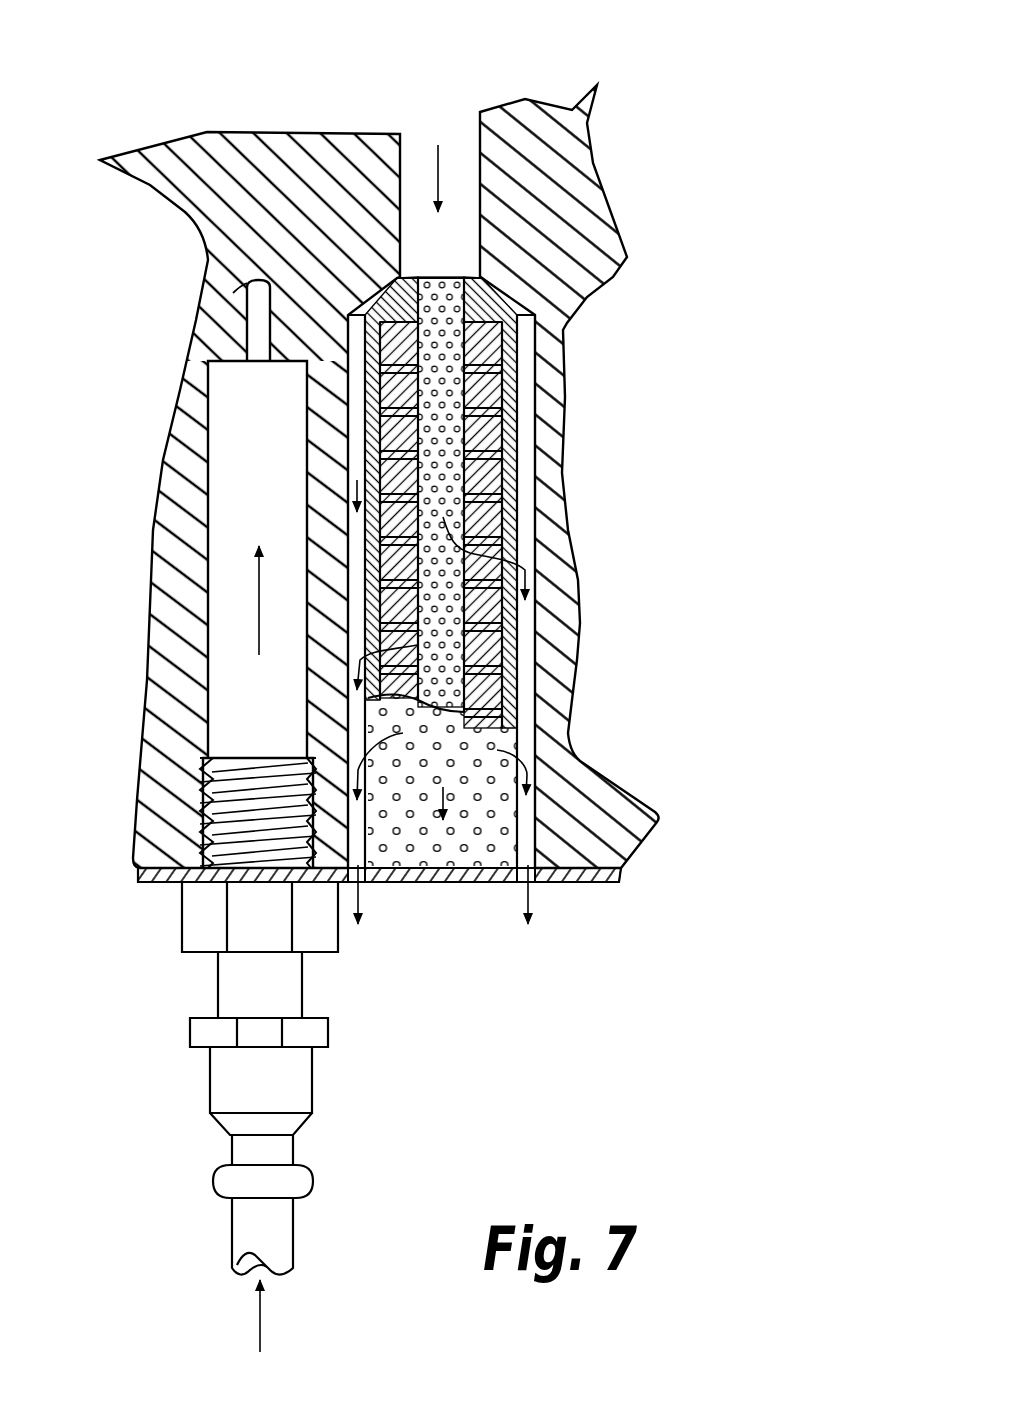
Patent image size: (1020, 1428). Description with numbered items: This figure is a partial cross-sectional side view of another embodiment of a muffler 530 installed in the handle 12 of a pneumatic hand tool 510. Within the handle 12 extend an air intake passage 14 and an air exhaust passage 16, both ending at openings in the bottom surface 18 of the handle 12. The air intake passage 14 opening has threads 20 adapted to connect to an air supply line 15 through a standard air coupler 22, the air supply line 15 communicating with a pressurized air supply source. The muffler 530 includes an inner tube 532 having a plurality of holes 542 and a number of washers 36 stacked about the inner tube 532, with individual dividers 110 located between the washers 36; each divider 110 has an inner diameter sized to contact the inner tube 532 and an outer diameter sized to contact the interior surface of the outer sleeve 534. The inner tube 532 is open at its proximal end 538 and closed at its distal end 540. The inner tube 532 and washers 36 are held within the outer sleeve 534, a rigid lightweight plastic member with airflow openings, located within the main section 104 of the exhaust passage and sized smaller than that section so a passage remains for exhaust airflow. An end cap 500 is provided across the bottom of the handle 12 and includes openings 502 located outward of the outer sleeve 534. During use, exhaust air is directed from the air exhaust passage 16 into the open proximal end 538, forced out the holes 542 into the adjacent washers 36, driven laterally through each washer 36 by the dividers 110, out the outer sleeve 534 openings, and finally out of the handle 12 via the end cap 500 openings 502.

The tool 510 is at (640, 91).
The handle 12 is at (186, 346).
The air intake passage 14 is at (247, 431).
The air exhaust passage 16 is at (457, 127).
The bottom surface 18 is at (628, 868).
The threads 20 is at (205, 795).
The air coupler 22 is at (225, 1085).
The air supply line 15 is at (240, 1226).
The main section 104 is at (524, 410).
The divider 110 is at (512, 530).
The muffler 530 is at (568, 523).
The inner tube 532 is at (462, 522).
The outer sleeve 534 is at (512, 638).
The proximal end 538 is at (440, 276).
The distal end 540 is at (404, 858).
The holes 542 is at (478, 471).
The end cap 500 is at (481, 882).
The openings 502 is at (540, 868).
The washers 36 is at (512, 698).